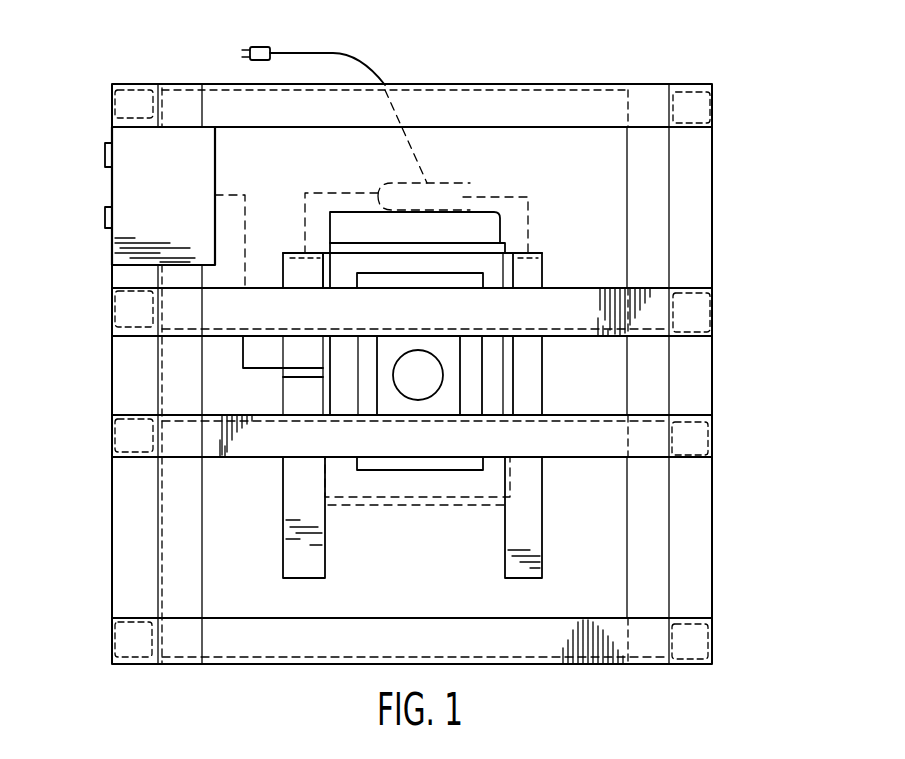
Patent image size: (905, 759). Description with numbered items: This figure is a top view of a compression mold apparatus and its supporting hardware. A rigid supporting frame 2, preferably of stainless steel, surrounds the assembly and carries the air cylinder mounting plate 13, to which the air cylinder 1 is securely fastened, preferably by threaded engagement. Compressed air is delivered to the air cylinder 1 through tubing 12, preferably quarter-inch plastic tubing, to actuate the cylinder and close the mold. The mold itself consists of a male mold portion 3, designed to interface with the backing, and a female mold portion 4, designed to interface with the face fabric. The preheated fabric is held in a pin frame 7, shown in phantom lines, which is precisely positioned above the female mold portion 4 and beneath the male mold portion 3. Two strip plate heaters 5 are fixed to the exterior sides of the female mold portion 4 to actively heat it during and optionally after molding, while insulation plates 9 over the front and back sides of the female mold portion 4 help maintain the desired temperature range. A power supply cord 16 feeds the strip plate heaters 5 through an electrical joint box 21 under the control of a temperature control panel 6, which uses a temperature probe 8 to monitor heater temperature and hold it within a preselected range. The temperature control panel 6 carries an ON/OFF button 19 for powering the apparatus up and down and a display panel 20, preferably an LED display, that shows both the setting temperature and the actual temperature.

The air cylinder 1 is at (426, 389).
The supporting frame 2 is at (702, 513).
The male mold portion 3 is at (481, 388).
The female mold portion 4 is at (413, 480).
The strip plate heaters 5 is at (295, 270).
The temperature control panel 6 is at (146, 205).
The pin frame 7 is at (427, 650).
The temperature probe 8 is at (285, 375).
The insulation plates 9 is at (478, 243).
The tubing 12 is at (242, 345).
The air cylinder mounting plate 13 is at (583, 445).
The power supply cord 16 is at (333, 53).
The ON/OFF button 19 is at (105, 155).
The display panel 20 is at (105, 217).
The electrical joint box 21 is at (447, 197).